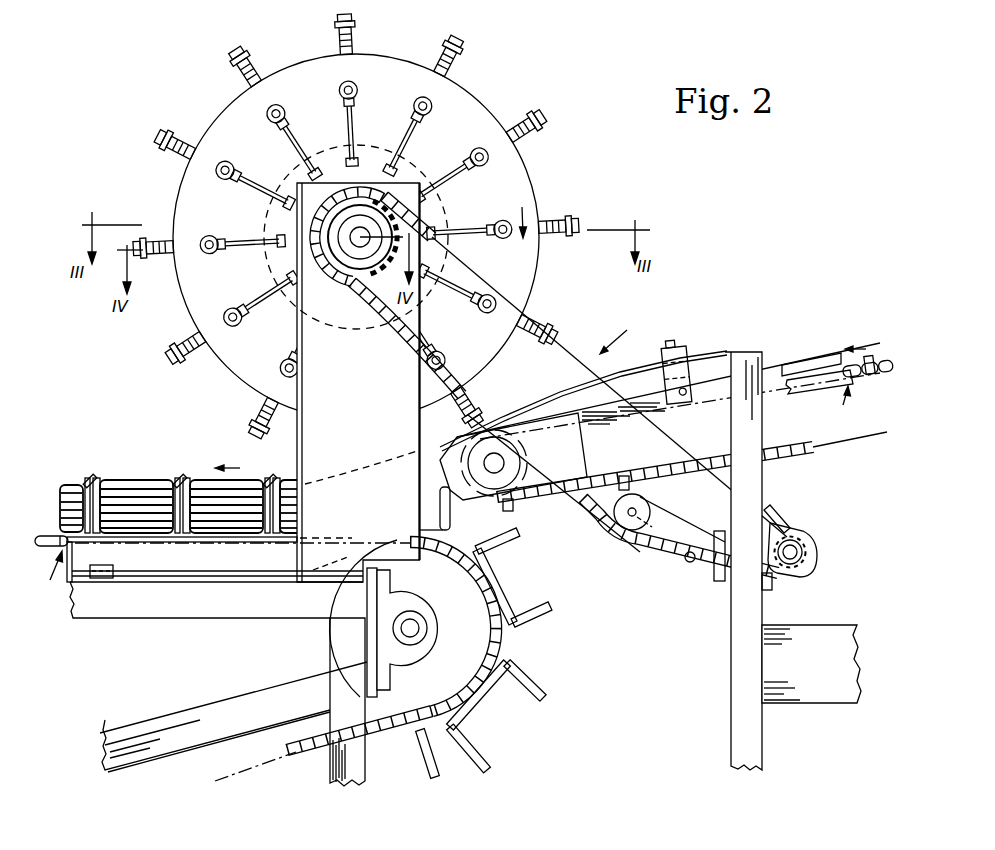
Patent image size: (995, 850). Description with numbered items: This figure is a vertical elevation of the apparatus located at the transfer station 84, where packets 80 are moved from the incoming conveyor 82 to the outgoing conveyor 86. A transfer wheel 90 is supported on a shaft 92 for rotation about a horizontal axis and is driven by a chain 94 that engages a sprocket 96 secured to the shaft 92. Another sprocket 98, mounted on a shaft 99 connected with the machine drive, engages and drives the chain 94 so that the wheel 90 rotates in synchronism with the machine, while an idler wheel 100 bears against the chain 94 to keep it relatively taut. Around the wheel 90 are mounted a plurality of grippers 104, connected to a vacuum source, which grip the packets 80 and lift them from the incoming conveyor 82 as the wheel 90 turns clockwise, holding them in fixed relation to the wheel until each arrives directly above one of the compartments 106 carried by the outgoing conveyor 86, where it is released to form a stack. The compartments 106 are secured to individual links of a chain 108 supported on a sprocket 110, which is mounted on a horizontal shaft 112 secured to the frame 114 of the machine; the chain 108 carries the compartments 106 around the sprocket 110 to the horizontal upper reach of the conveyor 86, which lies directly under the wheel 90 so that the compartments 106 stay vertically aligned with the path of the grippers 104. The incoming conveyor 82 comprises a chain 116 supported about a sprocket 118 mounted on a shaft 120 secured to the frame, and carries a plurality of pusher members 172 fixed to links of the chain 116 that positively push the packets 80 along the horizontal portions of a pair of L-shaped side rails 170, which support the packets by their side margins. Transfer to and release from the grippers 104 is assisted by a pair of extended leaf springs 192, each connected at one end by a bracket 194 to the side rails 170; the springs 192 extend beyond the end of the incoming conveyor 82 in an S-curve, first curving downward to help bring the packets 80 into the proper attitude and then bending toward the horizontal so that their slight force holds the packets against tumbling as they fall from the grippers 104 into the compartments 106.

The packets 80 is at (818, 366).
The incoming conveyor 82 is at (839, 408).
The transfer station 84 is at (617, 332).
The outgoing conveyor 86 is at (51, 569).
The transfer wheel 90 is at (466, 100).
The shaft 92 is at (360, 238).
The chain 94 is at (410, 352).
The sprocket 96 is at (436, 222).
The sprocket 98 is at (786, 574).
The shaft 99 is at (795, 546).
The idler wheel 100 is at (651, 505).
The grippers 104 is at (360, 22).
The compartments 106 is at (115, 467).
The chain 108 is at (294, 760).
The sprocket 110 is at (389, 728).
The horizontal shaft 112 is at (412, 630).
The frame 114 is at (227, 620).
The chain 116 is at (888, 372).
The sprocket 118 is at (533, 499).
The shaft 120 is at (500, 465).
The side rails 170 is at (708, 386).
The pusher members 172 is at (870, 356).
The leaf springs 192 is at (550, 393).
The bracket 194 is at (680, 362).